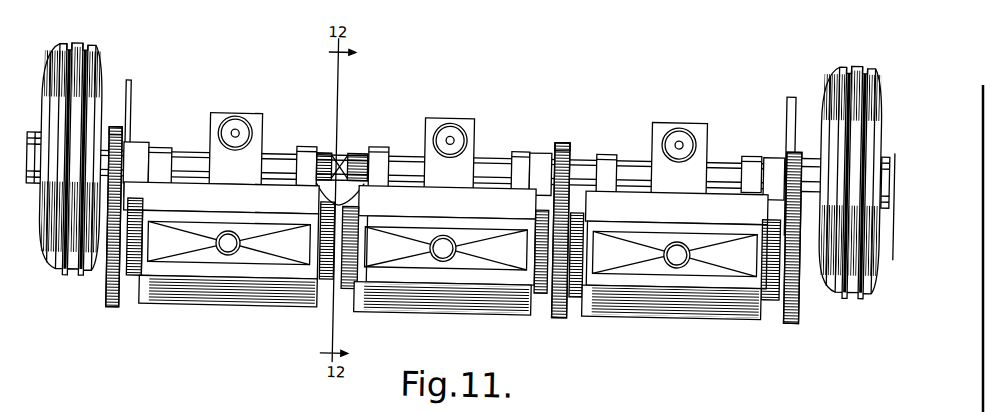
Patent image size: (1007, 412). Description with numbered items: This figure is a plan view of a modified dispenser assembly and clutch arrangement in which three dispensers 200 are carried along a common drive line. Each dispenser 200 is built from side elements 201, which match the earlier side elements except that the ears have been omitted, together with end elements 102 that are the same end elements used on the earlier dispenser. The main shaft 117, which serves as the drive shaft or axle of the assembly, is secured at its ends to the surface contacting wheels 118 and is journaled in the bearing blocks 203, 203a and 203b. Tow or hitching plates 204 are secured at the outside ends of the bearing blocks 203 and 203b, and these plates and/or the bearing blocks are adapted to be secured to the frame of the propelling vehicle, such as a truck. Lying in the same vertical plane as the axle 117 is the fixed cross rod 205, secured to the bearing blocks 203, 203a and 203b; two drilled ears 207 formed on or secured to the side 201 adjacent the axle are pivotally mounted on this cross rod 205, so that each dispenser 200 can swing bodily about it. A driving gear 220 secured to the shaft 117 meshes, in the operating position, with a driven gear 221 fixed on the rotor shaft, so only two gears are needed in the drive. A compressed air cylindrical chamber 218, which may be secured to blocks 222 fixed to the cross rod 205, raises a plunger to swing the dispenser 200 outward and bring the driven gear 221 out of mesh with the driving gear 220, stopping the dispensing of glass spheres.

The end element 102 is at (340, 156).
The main shaft 117 is at (188, 150).
The surface contacting wheel 118 is at (64, 281).
The dispenser 200 is at (239, 285).
The side element 201 is at (277, 189).
The bearing block 203 is at (136, 155).
The bearing block 203a is at (535, 157).
The bearing block 203b is at (769, 159).
The tow or hitching plate 204 is at (120, 85).
The cross rod 205 is at (495, 108).
The ear 207 is at (375, 149).
The compressed air cylindrical chamber 218 is at (231, 120).
The driving gear 220 is at (111, 129).
The driven gear 221 is at (112, 309).
The block 222 is at (240, 160).